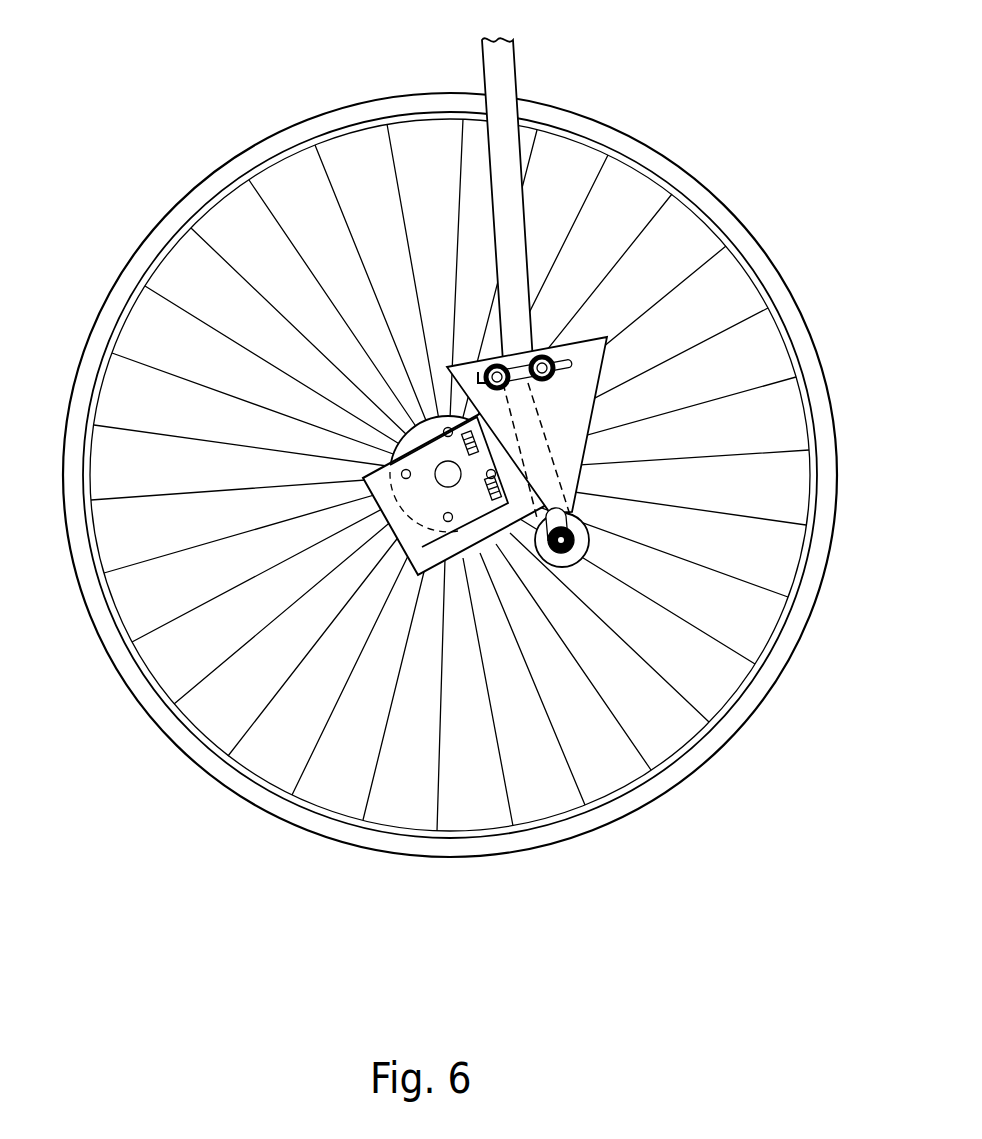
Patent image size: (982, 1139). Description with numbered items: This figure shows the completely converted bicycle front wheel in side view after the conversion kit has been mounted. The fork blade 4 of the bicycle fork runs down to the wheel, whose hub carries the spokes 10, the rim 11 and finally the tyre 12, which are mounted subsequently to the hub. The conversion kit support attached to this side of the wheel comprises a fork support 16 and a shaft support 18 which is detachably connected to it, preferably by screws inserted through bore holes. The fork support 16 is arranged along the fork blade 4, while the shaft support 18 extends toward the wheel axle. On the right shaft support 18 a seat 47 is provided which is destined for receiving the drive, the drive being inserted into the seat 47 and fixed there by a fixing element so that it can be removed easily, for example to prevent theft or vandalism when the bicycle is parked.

The fork blade 4 is at (498, 75).
The spokes 10 is at (397, 193).
The rim 11 is at (697, 742).
The tyre 12 is at (215, 762).
The fork support 16 is at (607, 337).
The shaft support 18 is at (153, 675).
The seat 47 is at (428, 505).